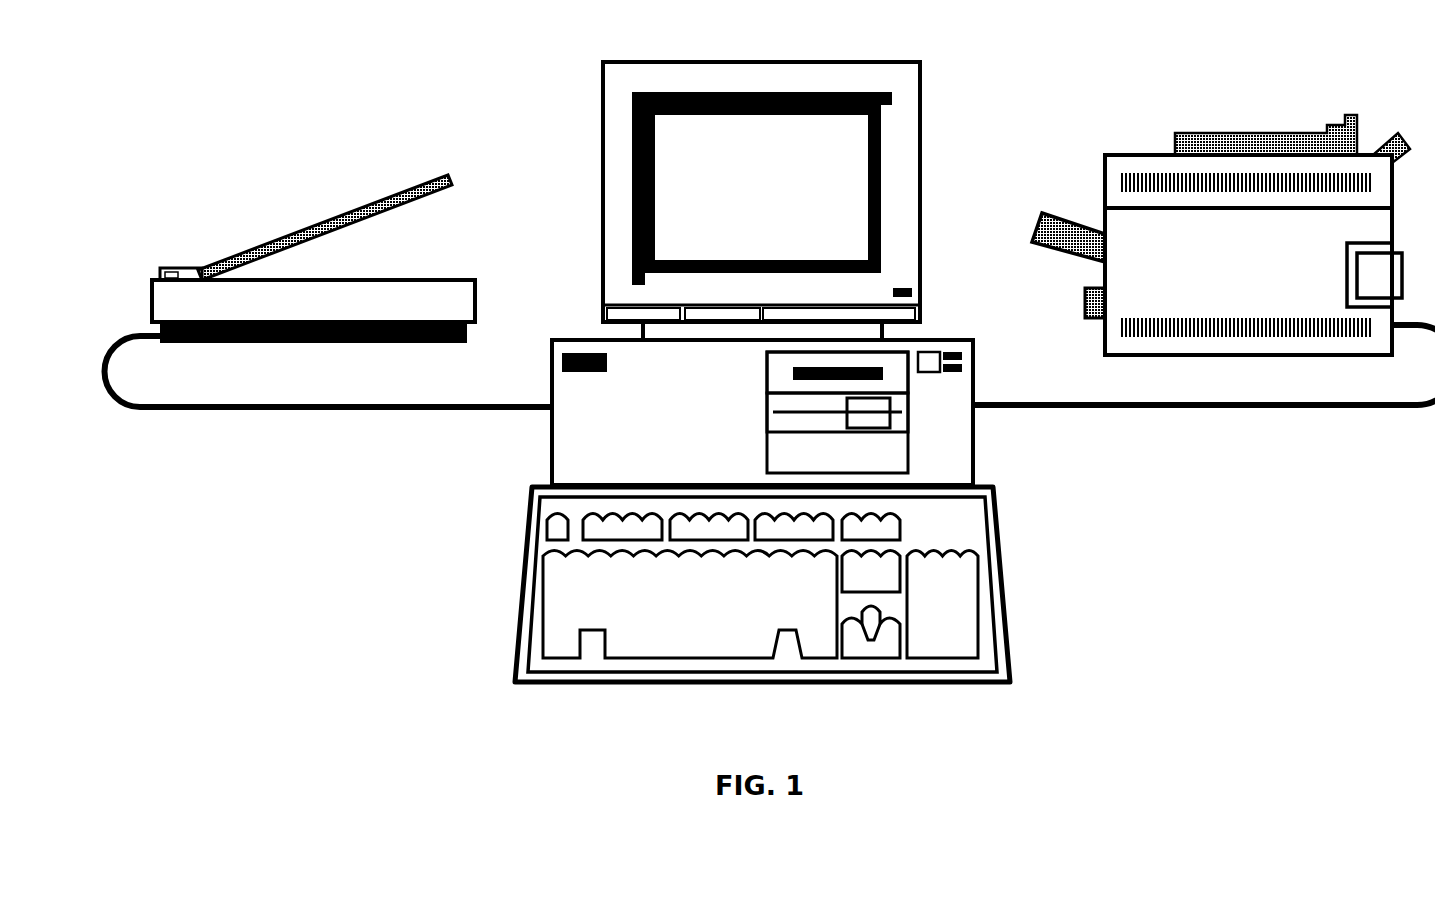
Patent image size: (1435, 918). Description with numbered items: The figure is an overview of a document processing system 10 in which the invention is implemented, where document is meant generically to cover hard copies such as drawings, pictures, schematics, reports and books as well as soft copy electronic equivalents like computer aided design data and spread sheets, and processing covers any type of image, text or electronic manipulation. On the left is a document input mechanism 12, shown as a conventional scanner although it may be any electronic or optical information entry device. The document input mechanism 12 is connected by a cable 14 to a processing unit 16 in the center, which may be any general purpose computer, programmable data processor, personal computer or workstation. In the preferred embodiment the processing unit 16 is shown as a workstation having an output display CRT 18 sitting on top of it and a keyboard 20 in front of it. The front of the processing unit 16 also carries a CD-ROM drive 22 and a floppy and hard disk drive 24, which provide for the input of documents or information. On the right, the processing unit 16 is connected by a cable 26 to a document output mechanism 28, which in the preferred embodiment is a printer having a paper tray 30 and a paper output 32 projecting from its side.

The document processing system 10 is at (355, 740).
The document input mechanism 12 is at (327, 313).
The cable 14 is at (325, 408).
The processing unit 16 is at (740, 431).
The output display CRT 18 is at (643, 62).
The keyboard 20 is at (1003, 576).
The CD-ROM drive 22 is at (908, 379).
The floppy and hard disk drive 24 is at (908, 426).
The cable 26 is at (1162, 408).
The document output mechanism 28 is at (1195, 235).
The paper tray 30 is at (1085, 300).
The paper output 32 is at (1040, 223).